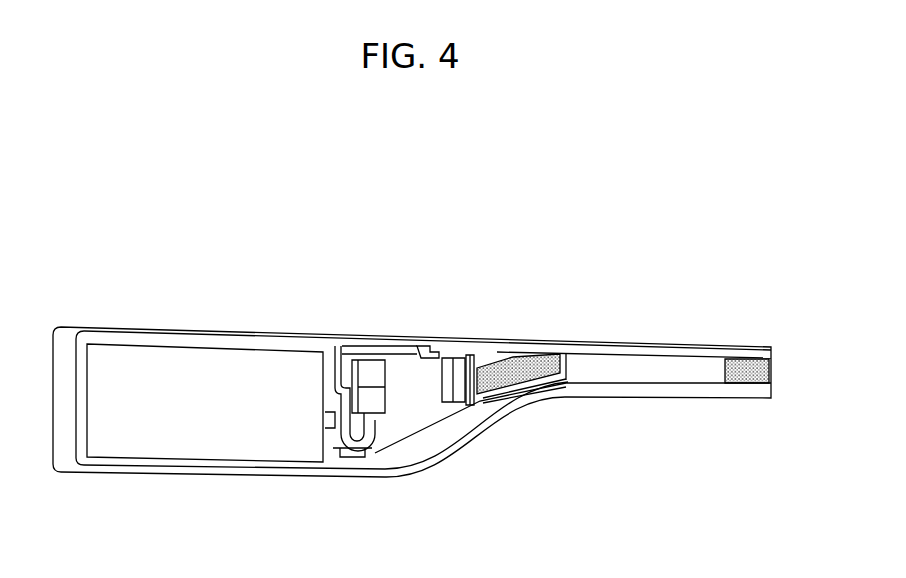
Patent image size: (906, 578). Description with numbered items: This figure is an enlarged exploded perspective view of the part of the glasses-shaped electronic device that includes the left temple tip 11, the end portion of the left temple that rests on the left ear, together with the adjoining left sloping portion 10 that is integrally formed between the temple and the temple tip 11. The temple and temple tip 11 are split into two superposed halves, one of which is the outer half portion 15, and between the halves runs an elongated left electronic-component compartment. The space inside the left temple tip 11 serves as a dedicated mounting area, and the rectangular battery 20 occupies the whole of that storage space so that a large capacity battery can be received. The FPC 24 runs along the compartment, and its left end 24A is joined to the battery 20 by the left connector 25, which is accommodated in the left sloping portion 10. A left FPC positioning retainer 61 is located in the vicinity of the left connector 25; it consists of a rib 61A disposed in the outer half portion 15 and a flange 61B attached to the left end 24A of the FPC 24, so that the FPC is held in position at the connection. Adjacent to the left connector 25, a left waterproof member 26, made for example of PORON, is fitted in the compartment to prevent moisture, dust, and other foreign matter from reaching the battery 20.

The left sloping portion 10 is at (425, 445).
The left temple tip 11 is at (123, 335).
The outer half portion 15 is at (653, 350).
The battery 20 is at (192, 445).
The FPC 24 is at (743, 373).
The left end of the FPC 24A is at (485, 398).
The left connector 25 is at (442, 372).
The left waterproof member 26 is at (633, 371).
The left FPC positioning retainer 61 is at (499, 324).
The rib 61A is at (518, 339).
The flange 61B is at (482, 353).